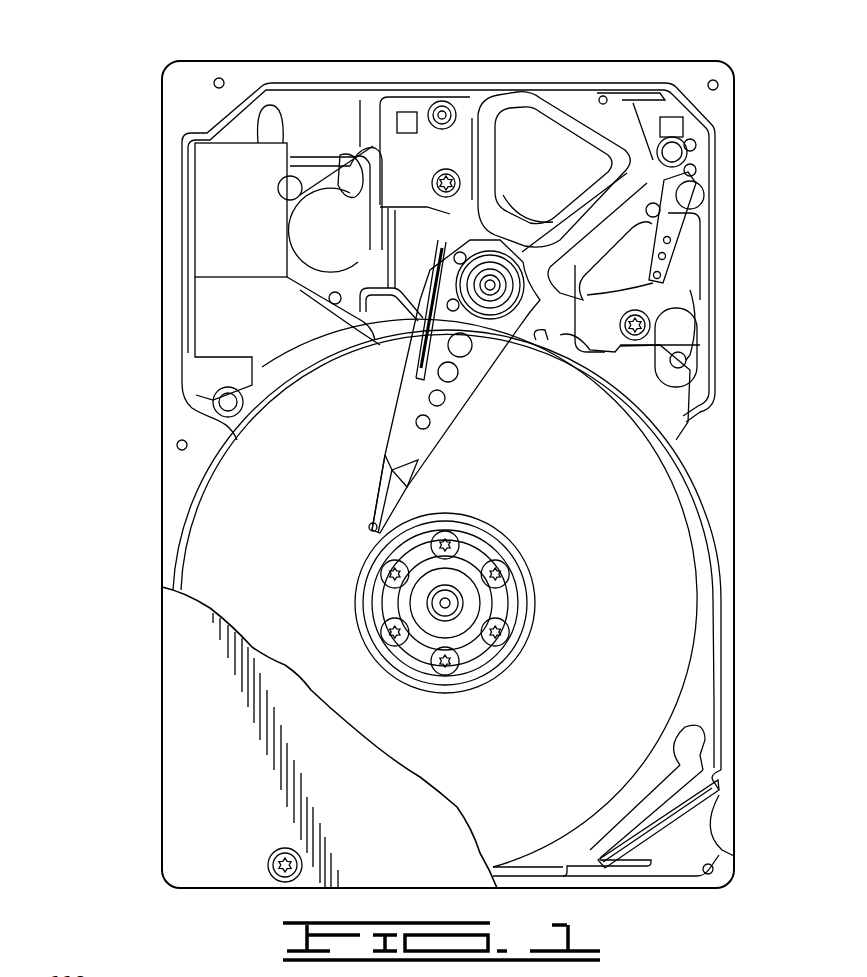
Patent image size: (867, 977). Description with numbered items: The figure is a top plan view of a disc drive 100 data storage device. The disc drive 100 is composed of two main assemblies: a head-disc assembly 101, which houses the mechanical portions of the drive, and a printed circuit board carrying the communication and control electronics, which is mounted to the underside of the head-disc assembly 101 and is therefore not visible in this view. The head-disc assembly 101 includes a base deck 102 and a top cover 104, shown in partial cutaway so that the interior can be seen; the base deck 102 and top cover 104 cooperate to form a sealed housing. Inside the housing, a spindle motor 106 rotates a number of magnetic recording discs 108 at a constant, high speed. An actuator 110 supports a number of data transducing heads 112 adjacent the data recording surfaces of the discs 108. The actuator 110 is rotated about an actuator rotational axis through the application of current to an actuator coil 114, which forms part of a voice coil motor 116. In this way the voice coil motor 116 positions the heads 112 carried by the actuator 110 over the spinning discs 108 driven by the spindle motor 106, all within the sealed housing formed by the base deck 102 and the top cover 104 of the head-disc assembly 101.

The disc drive 100 is at (268, 53).
The head-disc assembly 101 is at (130, 135).
The base deck 102 is at (300, 263).
The top cover 104 is at (185, 678).
The spindle motor 106 is at (458, 588).
The magnetic recording discs 108 is at (645, 655).
The actuator 110 is at (497, 322).
The data transducing heads 112 is at (370, 525).
The actuator coil 114 is at (540, 103).
The voice coil motor 116 is at (583, 108).